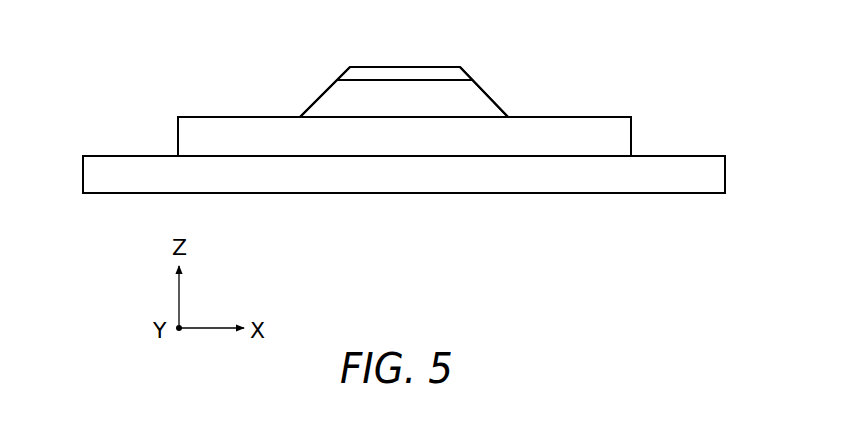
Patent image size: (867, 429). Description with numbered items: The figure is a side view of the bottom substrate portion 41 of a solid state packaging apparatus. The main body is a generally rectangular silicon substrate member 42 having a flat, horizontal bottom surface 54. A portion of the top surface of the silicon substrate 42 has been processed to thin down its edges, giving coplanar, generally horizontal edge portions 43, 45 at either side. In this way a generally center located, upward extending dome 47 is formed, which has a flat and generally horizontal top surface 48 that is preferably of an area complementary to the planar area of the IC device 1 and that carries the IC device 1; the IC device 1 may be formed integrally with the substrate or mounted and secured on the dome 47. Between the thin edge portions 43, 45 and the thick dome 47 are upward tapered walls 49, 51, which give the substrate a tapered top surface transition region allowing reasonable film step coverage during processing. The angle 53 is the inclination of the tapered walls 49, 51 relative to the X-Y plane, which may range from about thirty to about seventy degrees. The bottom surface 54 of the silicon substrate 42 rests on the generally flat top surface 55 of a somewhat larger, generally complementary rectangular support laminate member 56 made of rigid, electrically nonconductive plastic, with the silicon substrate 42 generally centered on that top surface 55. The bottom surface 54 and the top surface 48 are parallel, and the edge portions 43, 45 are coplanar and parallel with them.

The IC device 1 is at (376, 66).
The bottom substrate portion 41 is at (704, 126).
The silicon substrate member 42 is at (643, 107).
The edge portion 43 is at (557, 117).
The edge portion 45 is at (225, 117).
The dome 47 is at (491, 62).
The top surface 48 is at (420, 80).
The tapered wall 49 is at (484, 93).
The tapered wall 51 is at (323, 93).
The angle 53 is at (322, 117).
The bottom surface 54 is at (470, 157).
The top surface 55 is at (130, 155).
The support laminate member 56 is at (726, 173).